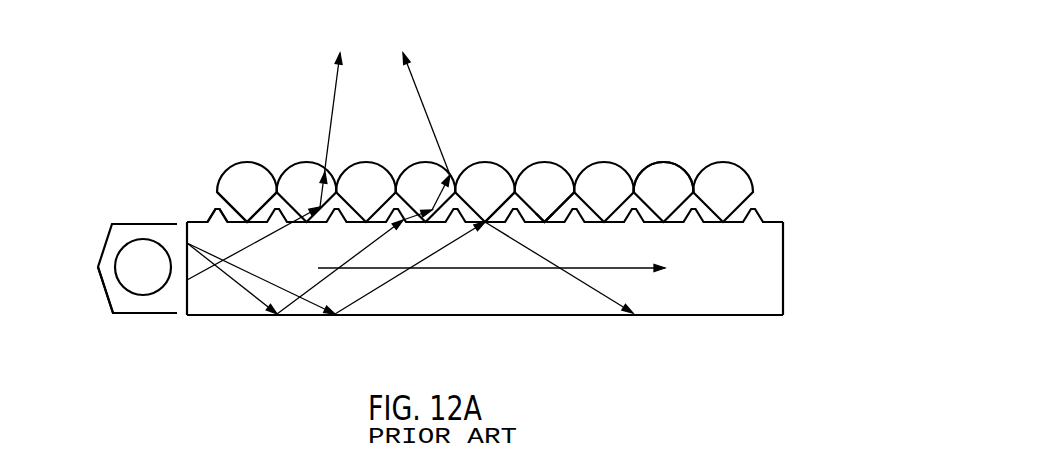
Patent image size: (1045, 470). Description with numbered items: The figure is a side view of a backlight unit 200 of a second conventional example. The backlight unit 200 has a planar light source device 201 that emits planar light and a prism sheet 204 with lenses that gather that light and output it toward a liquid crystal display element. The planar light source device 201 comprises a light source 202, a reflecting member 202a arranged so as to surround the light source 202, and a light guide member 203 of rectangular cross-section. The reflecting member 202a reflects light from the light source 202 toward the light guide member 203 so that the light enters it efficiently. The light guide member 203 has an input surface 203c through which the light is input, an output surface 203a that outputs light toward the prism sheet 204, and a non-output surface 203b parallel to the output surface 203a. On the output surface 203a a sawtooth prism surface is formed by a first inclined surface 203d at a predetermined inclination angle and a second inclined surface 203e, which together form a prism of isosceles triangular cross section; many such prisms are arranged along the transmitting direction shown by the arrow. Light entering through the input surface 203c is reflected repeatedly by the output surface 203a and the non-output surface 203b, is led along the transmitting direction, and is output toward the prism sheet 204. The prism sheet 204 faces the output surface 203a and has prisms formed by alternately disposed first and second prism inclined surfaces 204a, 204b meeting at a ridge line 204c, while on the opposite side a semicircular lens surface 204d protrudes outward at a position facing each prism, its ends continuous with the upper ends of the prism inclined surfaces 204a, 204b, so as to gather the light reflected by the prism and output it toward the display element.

The backlight unit 200 is at (704, 76).
The planar light source device 201 is at (143, 219).
The light source 202 is at (143, 292).
The reflecting member 202a is at (100, 285).
The light guide member 203 is at (489, 250).
The output surface 203a is at (776, 211).
The non-output surface 203b is at (728, 316).
The input surface 203c is at (186, 298).
The first inclined surface 203d is at (207, 217).
The second inclined surface 203e is at (224, 210).
The prism sheet 204 is at (485, 150).
The first prism inclined surface 204a is at (503, 205).
The second prism inclined surface 204b is at (573, 205).
The ridge line 204c is at (547, 215).
The lens surface 204d is at (658, 162).